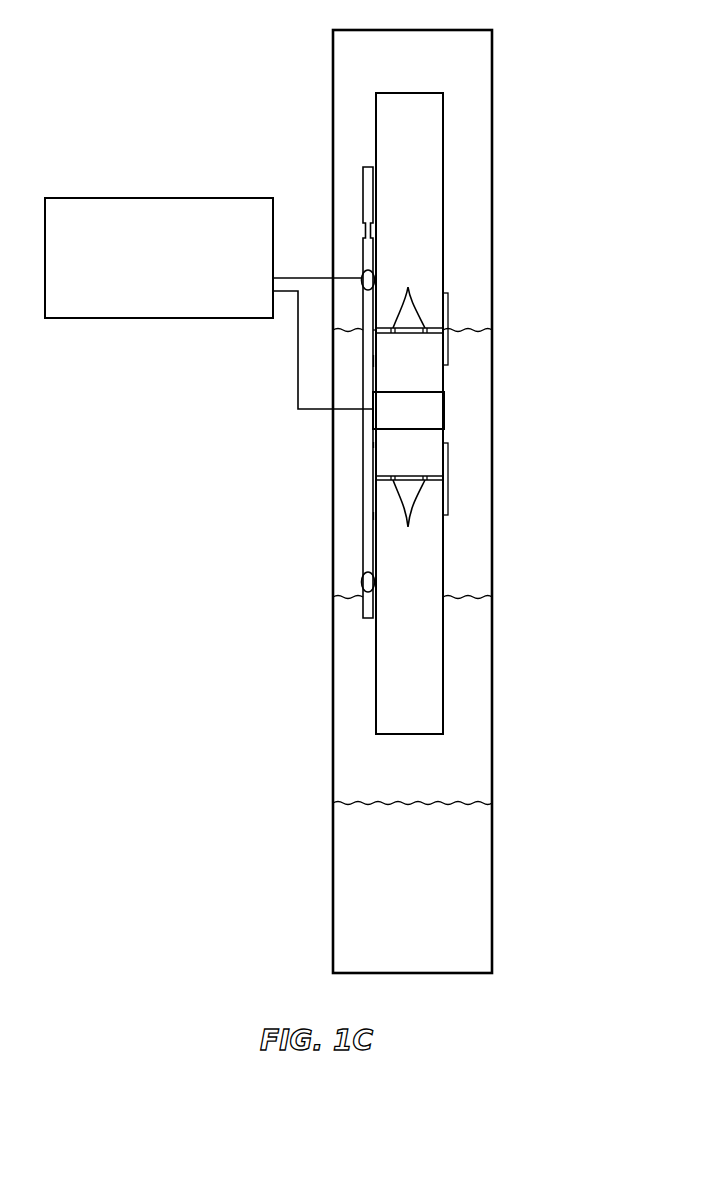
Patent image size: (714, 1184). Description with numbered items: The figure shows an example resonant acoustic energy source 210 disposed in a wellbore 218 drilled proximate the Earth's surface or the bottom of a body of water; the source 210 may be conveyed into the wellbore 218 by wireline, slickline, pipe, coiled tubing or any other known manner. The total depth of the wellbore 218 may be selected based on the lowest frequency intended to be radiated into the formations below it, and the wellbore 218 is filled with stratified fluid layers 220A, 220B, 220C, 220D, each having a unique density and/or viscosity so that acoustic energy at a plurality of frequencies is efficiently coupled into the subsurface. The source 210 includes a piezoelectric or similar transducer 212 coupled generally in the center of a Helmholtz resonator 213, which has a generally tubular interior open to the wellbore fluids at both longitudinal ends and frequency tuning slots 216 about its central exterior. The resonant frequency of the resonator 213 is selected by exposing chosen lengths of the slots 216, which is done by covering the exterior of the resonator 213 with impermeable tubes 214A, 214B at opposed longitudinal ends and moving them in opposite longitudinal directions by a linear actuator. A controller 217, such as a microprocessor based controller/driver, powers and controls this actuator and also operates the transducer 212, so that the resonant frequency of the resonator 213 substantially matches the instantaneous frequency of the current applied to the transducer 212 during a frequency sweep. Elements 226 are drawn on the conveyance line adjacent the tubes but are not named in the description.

The source 210 is at (477, 152).
The transducer 212 is at (465, 407).
The Helmholtz resonator 213 is at (430, 375).
The impermeable tube 214A is at (458, 231).
The impermeable tube 214B is at (458, 561).
The frequency tuning slots 216 is at (408, 290).
The controller 217 is at (101, 197).
The wellbore 218 is at (343, 58).
The fluid layer 220A is at (480, 876).
The fluid layer 220B is at (480, 666).
The fluid layer 220C is at (480, 365).
The fluid layer 220D is at (343, 168).
The sensor / valve 226 is at (361, 280).